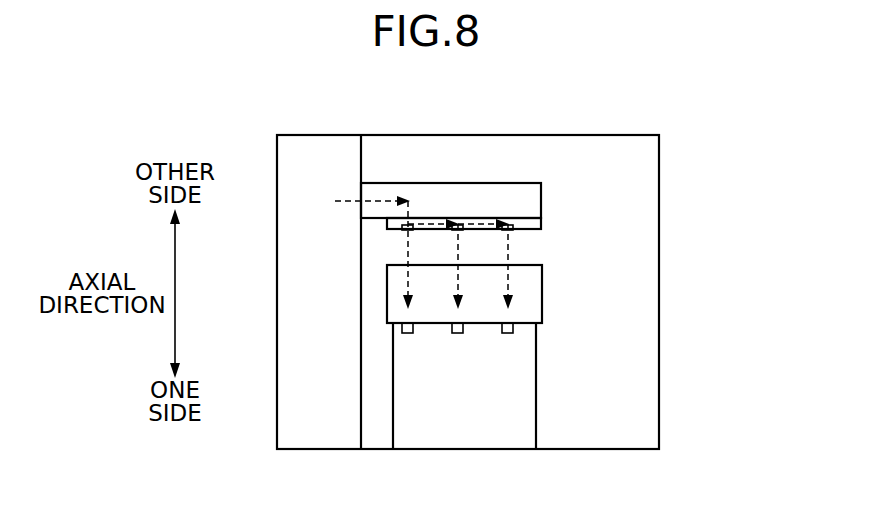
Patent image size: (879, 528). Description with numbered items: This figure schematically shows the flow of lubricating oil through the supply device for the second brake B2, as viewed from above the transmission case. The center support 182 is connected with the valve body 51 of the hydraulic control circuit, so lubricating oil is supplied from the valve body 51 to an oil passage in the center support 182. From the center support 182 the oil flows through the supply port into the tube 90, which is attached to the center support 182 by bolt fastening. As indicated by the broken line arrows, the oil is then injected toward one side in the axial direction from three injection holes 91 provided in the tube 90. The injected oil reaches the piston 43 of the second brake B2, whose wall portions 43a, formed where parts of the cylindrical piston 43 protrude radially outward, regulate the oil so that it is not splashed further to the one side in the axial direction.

The valve body 51 is at (313, 153).
The center support 182 is at (458, 200).
The tube 90 is at (530, 235).
The injection holes 91 is at (405, 231).
The second brake B2 is at (546, 292).
The piston 43 is at (536, 373).
The wall portions 43a is at (407, 333).